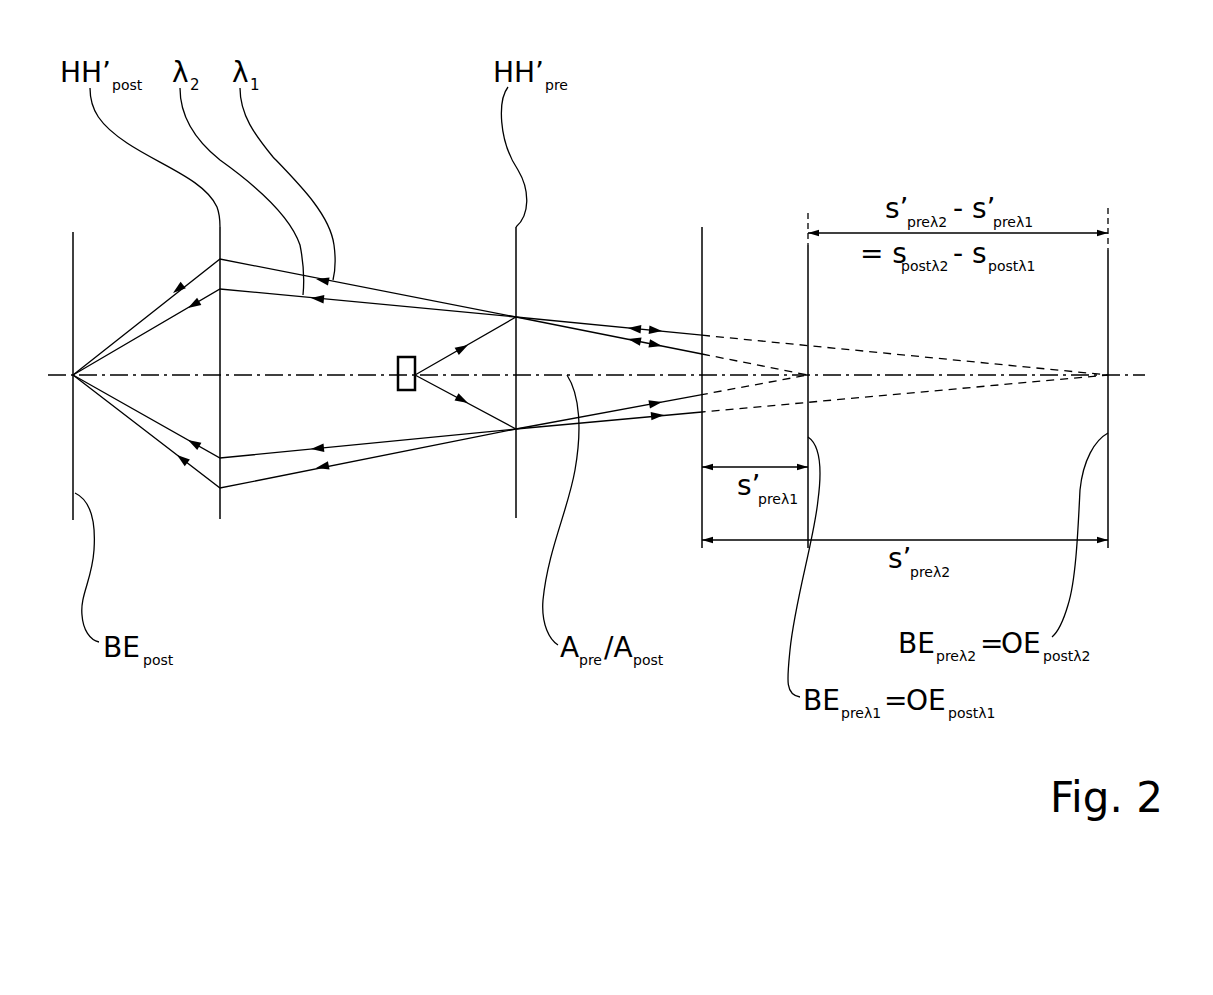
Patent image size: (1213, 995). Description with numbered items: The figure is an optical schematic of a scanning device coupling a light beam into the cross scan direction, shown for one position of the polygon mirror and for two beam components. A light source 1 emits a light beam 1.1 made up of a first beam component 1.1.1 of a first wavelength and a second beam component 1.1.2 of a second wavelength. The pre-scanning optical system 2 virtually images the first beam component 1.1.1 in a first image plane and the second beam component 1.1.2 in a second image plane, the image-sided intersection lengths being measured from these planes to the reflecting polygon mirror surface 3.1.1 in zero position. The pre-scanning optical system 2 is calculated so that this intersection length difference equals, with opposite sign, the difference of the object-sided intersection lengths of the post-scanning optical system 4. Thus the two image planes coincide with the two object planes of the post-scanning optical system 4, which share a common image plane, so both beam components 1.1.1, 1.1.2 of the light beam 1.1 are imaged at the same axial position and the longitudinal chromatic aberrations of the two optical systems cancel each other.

The light source 1 is at (402, 388).
The pre-scanning optical system 2 is at (514, 500).
The post-scanning optical system 4 is at (221, 501).
The light beam 1.1 is at (467, 350).
The first beam component 1.1.1 is at (628, 337).
The second beam component 1.1.2 is at (630, 325).
The reflecting polygon mirror surface 3.1.1 is at (702, 271).